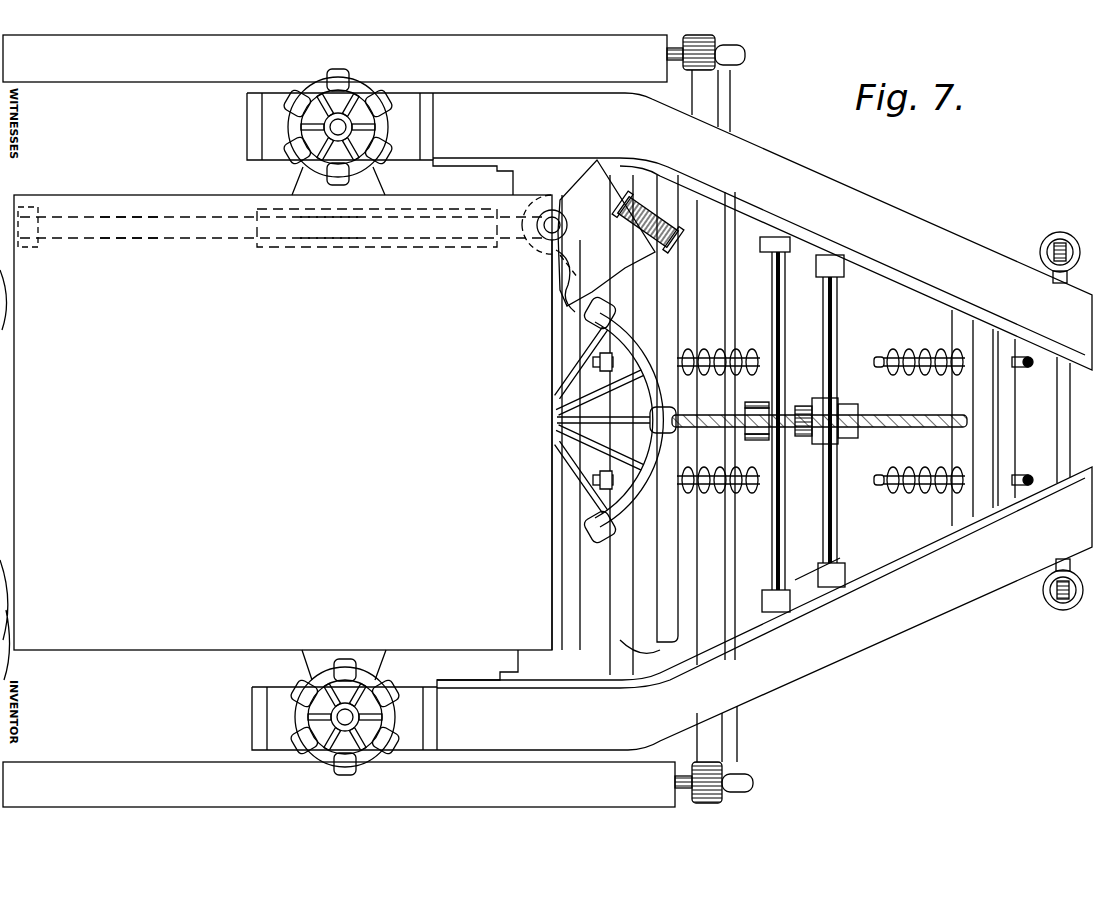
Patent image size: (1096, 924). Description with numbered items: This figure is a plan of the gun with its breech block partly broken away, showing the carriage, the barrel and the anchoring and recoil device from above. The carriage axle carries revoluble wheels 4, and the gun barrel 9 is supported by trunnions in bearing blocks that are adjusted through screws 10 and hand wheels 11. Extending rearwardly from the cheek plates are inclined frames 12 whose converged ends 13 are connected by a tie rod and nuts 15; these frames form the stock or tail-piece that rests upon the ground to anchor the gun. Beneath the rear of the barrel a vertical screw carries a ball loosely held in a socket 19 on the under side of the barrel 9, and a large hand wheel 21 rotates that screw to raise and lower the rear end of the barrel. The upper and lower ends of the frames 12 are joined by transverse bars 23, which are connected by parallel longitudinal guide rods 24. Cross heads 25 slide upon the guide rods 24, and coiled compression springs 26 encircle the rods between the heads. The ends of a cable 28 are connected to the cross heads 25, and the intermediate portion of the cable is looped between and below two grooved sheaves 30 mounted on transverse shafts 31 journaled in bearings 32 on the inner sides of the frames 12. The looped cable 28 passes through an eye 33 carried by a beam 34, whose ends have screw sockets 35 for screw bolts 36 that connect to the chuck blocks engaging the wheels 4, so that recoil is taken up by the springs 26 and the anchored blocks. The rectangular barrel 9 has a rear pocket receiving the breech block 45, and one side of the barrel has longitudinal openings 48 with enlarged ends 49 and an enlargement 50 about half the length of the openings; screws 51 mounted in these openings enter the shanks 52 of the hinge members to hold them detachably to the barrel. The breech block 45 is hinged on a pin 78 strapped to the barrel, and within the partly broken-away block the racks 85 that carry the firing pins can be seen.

The wheels 4 is at (339, 421).
The gun barrel 9 is at (283, 422).
The screws 10 is at (336, 123).
The hand wheels 11 is at (346, 80).
The inclined frames 12 is at (437, 421).
The ends of the frames 13 is at (856, 421).
The nuts 15 is at (1057, 234).
The socket 19 is at (550, 307).
The hand wheel 21 is at (648, 388).
The transverse bars 23 is at (623, 588).
The guide rods 24 is at (879, 356).
The cross heads 25 is at (667, 303).
The coiled compression springs 26 is at (742, 486).
The cable 28 is at (819, 435).
The grooved sheaves 30 is at (815, 440).
The transverse shafts 31 is at (830, 519).
The bearings 32 is at (818, 598).
The eye 33 is at (760, 445).
The beam 34 is at (725, 96).
The screw sockets 35 is at (720, 41).
The screw bolts 36 is at (745, 55).
The breech block 45 is at (606, 233).
The longitudinal openings 48 is at (185, 240).
The enlarged ends 49 is at (30, 247).
The enlargement 50 is at (432, 247).
The screws 51 is at (125, 240).
The shanks 52 is at (352, 240).
The pin 78 is at (550, 232).
The racks 85 is at (660, 213).